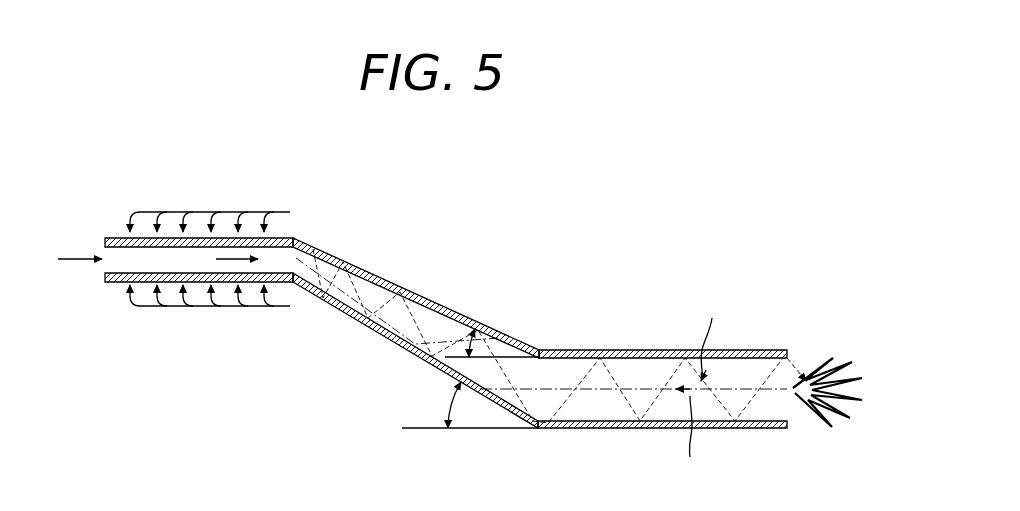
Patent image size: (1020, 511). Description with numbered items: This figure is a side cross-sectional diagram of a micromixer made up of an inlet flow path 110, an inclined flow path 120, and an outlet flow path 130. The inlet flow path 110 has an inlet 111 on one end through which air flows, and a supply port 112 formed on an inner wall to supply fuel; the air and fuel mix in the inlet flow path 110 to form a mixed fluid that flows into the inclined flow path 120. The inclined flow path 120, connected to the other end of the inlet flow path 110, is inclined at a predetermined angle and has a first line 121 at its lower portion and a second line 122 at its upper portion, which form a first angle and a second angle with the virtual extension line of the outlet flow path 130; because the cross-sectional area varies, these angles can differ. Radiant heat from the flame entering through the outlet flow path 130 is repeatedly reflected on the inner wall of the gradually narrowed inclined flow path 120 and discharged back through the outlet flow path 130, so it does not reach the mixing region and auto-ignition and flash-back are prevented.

The inlet flow path 110 is at (105, 238).
The inlet 111 is at (105, 256).
The supply port 112 is at (132, 283).
The inclined flow path 120 is at (539, 348).
The first line 121 is at (376, 328).
The second line 122 is at (393, 290).
The outlet flow path 130 is at (787, 348).